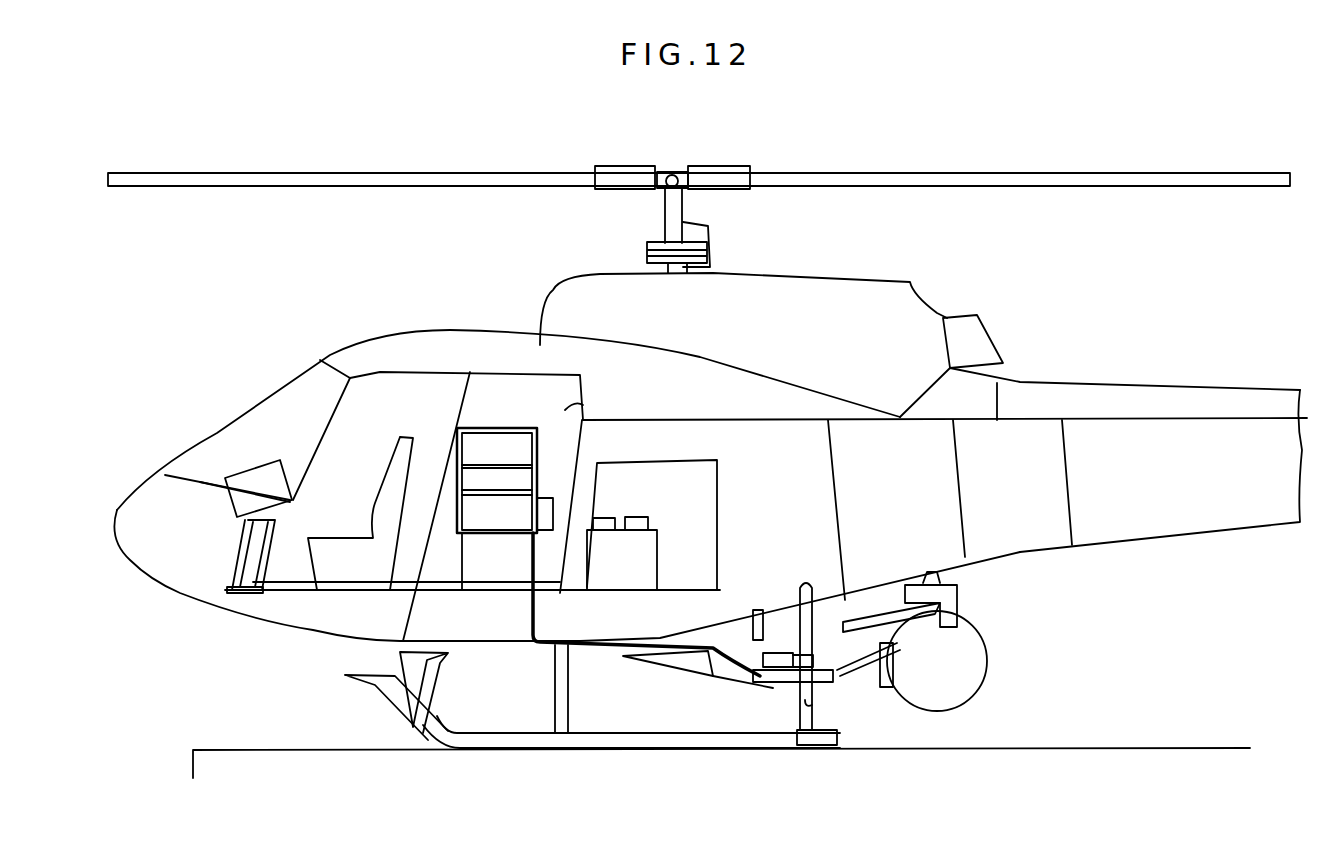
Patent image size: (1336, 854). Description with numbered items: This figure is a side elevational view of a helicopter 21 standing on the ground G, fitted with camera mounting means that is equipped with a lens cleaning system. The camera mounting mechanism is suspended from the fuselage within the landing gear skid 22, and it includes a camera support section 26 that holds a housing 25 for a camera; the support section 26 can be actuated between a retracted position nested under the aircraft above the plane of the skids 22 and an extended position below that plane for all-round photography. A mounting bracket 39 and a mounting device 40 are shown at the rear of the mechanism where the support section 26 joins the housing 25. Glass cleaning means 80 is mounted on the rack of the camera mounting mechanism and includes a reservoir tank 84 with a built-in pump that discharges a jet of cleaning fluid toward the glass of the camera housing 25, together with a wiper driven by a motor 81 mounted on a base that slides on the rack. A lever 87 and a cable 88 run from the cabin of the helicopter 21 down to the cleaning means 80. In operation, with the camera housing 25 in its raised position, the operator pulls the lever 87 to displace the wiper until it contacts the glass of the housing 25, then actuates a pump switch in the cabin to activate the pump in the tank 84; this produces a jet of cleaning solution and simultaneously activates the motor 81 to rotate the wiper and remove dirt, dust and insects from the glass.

The helicopter 21 is at (617, 166).
The landing gear skid 22 is at (393, 716).
The housing 25 is at (963, 707).
The camera support section 26 is at (870, 603).
The mounting bracket 39 is at (700, 682).
The mounting device 40 is at (957, 603).
The glass cleaning means 80 is at (772, 693).
The motor 81 is at (775, 640).
The reservoir tank 84 is at (553, 518).
The lever 87 is at (456, 493).
The cable 88 is at (528, 600).
The ground G is at (233, 748).